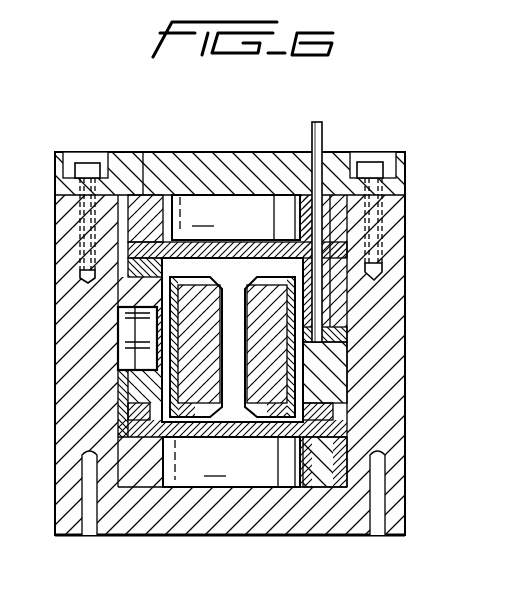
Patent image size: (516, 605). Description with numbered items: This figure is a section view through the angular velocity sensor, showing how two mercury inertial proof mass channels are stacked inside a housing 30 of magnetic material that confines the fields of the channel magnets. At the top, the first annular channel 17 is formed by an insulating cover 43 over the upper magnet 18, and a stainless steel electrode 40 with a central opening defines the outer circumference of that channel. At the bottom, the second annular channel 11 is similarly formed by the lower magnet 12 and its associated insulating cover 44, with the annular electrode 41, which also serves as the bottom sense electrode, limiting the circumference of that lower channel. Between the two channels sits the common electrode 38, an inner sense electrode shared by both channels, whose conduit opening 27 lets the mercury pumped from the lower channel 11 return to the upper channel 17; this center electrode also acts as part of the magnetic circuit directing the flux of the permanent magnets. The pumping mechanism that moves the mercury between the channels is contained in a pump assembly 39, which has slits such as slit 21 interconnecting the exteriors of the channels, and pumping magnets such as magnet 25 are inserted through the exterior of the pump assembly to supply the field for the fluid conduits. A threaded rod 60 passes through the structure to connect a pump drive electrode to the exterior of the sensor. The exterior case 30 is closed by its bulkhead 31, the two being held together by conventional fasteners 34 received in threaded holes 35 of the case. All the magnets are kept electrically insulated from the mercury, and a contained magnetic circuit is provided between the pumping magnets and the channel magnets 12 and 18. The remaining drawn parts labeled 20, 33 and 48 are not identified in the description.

The second annular channel 11 is at (118, 430).
The magnet 12 is at (237, 462).
The first annular channel 17 is at (160, 268).
The magnet 18 is at (242, 218).
The electrode 20 is at (308, 304).
The slit 21 is at (130, 383).
The magnet 25 is at (133, 332).
The conduit opening 27 is at (222, 342).
The housing 30 is at (407, 353).
The bulkhead 31 is at (232, 158).
The mounting hole 33 is at (88, 532).
The fasteners 34 is at (87, 165).
The threaded holes 35 is at (88, 278).
The common electrode 38 is at (278, 350).
The pump assembly 39 is at (352, 218).
The stainless steel electrode 40 is at (168, 277).
The annular electrode 41 is at (337, 418).
The insulating cover 43 is at (143, 195).
The insulating cover 44 is at (328, 450).
The pole piece 48 is at (330, 385).
The threaded rod 60 is at (312, 133).